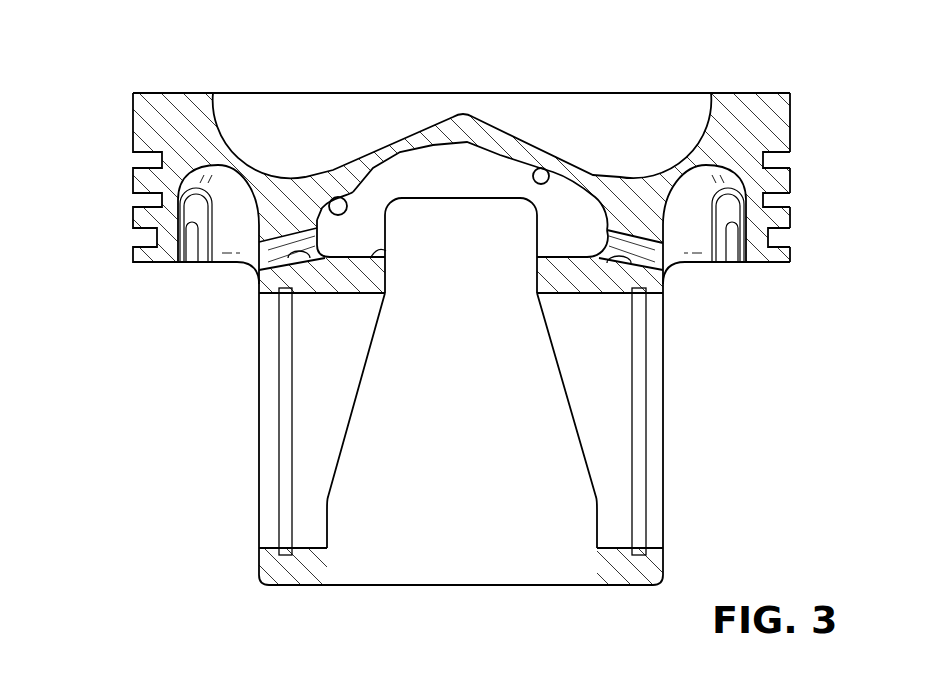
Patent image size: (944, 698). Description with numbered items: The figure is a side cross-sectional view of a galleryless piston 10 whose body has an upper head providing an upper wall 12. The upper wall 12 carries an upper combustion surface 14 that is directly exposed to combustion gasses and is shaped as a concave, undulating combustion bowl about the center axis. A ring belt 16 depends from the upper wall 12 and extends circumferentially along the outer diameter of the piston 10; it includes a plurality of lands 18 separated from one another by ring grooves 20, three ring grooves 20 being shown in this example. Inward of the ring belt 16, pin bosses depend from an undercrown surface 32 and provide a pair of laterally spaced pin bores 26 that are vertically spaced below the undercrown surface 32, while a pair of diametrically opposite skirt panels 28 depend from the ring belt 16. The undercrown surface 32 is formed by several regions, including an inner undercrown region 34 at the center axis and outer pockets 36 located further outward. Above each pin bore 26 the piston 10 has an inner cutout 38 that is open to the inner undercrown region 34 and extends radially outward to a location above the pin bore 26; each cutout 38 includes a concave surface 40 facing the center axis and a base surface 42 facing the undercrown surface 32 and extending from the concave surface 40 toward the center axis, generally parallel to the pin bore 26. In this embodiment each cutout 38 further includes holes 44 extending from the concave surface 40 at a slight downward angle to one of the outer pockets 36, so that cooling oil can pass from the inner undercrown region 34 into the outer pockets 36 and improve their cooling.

The piston 10 is at (100, 48).
The upper wall 12 is at (133, 88).
The upper combustion surface 14 is at (222, 133).
The ring belt 16 is at (797, 132).
The lands 18 is at (792, 112).
The ring grooves 20 is at (792, 160).
The pin bores 26 is at (328, 417).
The skirt panels 28 is at (490, 558).
The undercrown surface 32 is at (553, 178).
The inner undercrown region 34 is at (508, 238).
The outer pockets 36 is at (247, 237).
The cutouts 38 is at (373, 240).
The concave surface 40 is at (347, 196).
The base surface 42 is at (386, 250).
The holes 44 is at (322, 258).